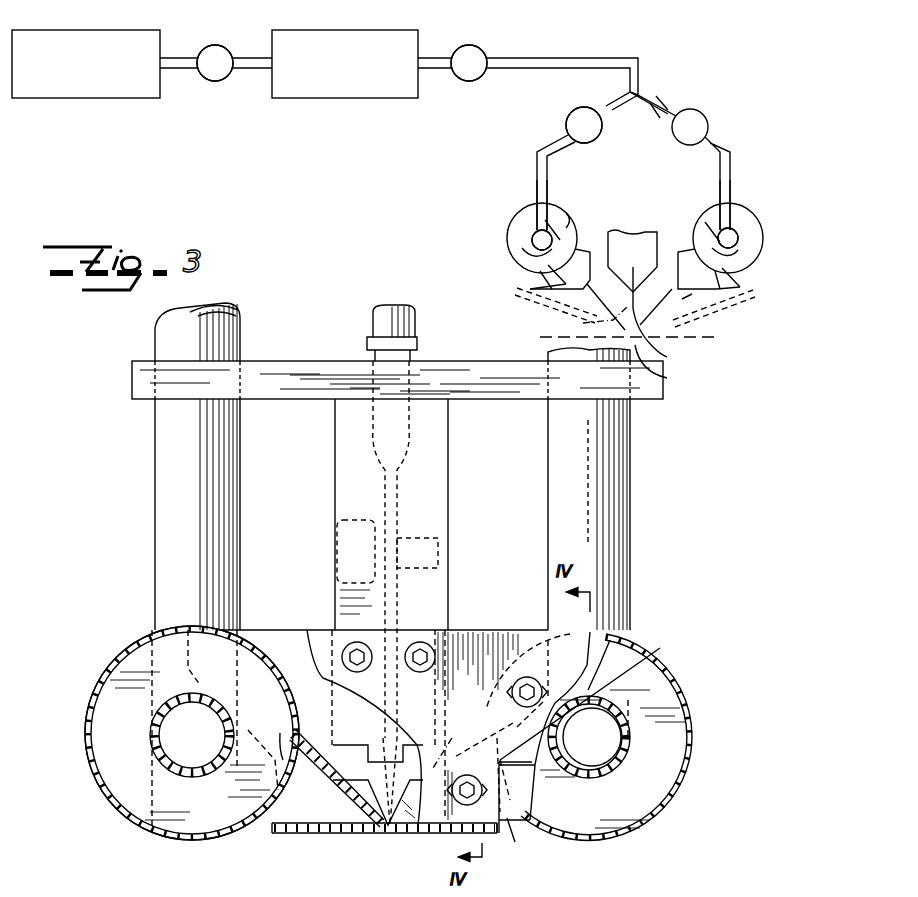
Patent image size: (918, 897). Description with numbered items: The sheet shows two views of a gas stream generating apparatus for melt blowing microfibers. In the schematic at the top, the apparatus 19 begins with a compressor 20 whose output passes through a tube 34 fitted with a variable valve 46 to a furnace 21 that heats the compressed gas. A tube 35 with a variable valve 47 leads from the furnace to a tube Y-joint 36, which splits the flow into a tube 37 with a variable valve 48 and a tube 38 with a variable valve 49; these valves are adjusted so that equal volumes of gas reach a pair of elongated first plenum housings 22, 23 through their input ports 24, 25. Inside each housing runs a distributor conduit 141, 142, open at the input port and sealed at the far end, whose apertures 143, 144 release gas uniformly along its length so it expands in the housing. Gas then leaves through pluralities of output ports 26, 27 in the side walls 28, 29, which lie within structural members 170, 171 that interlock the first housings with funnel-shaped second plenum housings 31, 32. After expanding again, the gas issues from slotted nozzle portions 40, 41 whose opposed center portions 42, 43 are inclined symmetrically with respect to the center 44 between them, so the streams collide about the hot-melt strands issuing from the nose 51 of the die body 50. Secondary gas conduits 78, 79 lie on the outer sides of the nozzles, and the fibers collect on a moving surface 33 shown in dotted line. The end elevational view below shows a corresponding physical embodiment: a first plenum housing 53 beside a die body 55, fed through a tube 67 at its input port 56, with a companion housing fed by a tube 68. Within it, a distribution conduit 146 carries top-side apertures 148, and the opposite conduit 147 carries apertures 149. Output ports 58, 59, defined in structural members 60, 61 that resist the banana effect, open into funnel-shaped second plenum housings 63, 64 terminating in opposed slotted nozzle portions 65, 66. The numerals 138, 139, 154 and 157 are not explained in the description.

In FIG. 1, the gas stream generating apparatus 19 is at (658, 52).
In FIG. 1, the compressor 20 is at (78, 92).
In FIG. 1, the furnace 21 is at (320, 90).
In FIG. 1, the first plenum housing 22 is at (508, 265).
In FIG. 1, the first plenum housing 23 is at (763, 235).
In FIG. 1, the input port 24 is at (548, 214).
In FIG. 1, the input port 25 is at (718, 212).
In FIG. 1, the output ports 26 is at (535, 292).
In FIG. 1, the output ports 27 is at (742, 287).
In FIG. 1, the side wall 28 is at (528, 200).
In FIG. 1, the side wall 29 is at (742, 195).
In FIG. 1, the second plenum housing 31 is at (586, 242).
In FIG. 1, the second plenum housing 32 is at (684, 242).
In FIG. 1, the moving surface 33 is at (717, 339).
In FIG. 1, the tube 34 is at (240, 50).
In FIG. 1, the tube 35 is at (440, 52).
In FIG. 1, the tube Y-joint 36 is at (640, 80).
In FIG. 1, the tube 37 is at (605, 107).
In FIG. 1, the tube 38 is at (665, 110).
In FIG. 1, the slotted nozzle portion 40 is at (606, 302).
In FIG. 1, the slotted nozzle portion 41 is at (696, 296).
In FIG. 1, the center portion 42 is at (591, 319).
In FIG. 1, the center portion 43 is at (656, 298).
In FIG. 1, the center 44 is at (667, 378).
In FIG. 1, the variable valve 46 is at (212, 81).
In FIG. 1, the variable valve 47 is at (470, 81).
In FIG. 1, the variable valve 48 is at (584, 143).
In FIG. 1, the variable valve 49 is at (700, 108).
In FIG. 1, the die body 50 is at (628, 233).
In FIG. 1, the forward end or nose 51 is at (663, 334).
In FIG. 3, the first plenum housing 53 is at (95, 790).
In FIG. 3, the die body 55 is at (440, 580).
In FIG. 3, the input port 56 is at (158, 748).
In FIG. 3, the output ports 58 is at (272, 740).
In FIG. 3, the output ports 59 is at (540, 790).
In FIG. 3, the structural member 60 is at (305, 725).
In FIG. 3, the structural member 61 is at (520, 712).
In FIG. 3, the second plenum housing 63 is at (300, 835).
In FIG. 3, the second plenum housing 64 is at (515, 842).
In FIG. 3, the slotted nozzle portion 65 is at (378, 835).
In FIG. 3, the slotted nozzle portion 66 is at (390, 830).
In FIG. 3, the tube 67 is at (242, 330).
In FIG. 3, the tube 68 is at (546, 440).
In FIG. 1, the secondary gas conduit 78 is at (545, 316).
In FIG. 1, the secondary gas conduit 79 is at (755, 300).
In FIG. 3, the guide surface 138 is at (520, 625).
In FIG. 3, the slide member 139 is at (452, 738).
In FIG. 1, the distributor conduit 141 is at (522, 248).
In FIG. 1, the distributor conduit 142 is at (738, 250).
In FIG. 1, the apertures 143 is at (530, 228).
In FIG. 1, the apertures 144 is at (736, 229).
In FIG. 3, the distribution conduit 146 is at (160, 770).
In FIG. 3, the distribution conduit 147 is at (598, 772).
In FIG. 3, the apertures 148 is at (172, 695).
In FIG. 3, the apertures 149 is at (660, 648).
In FIG. 3, the right wheel rim 154 is at (688, 785).
In FIG. 3, the right hub bore 157 is at (612, 740).
In FIG. 1, the structural member 170 is at (560, 220).
In FIG. 1, the structural member 171 is at (700, 208).